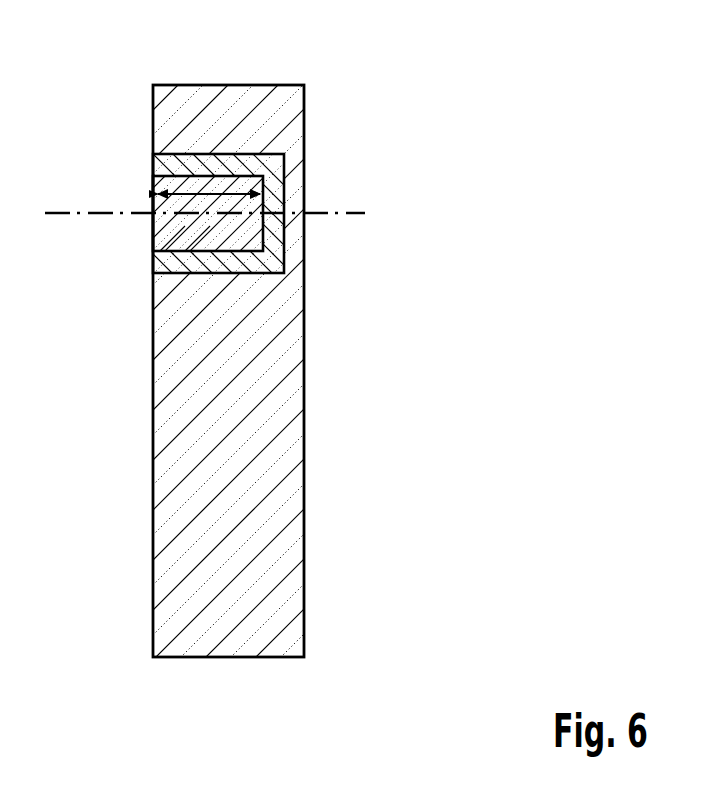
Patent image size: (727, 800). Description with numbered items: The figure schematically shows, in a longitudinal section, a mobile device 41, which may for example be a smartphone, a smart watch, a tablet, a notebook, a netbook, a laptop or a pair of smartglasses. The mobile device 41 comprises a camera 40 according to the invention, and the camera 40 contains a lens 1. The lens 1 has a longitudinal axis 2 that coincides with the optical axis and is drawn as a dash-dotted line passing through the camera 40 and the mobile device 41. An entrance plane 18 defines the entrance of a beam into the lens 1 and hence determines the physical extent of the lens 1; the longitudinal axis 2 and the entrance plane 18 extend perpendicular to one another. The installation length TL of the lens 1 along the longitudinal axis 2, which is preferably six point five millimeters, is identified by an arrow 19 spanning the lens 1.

The lens 1 is at (180, 243).
The longitudinal axis 2 is at (53, 212).
The entrance plane 18 is at (153, 233).
The arrow 19 is at (190, 190).
The camera 40 is at (272, 258).
The mobile device 41 is at (233, 95).